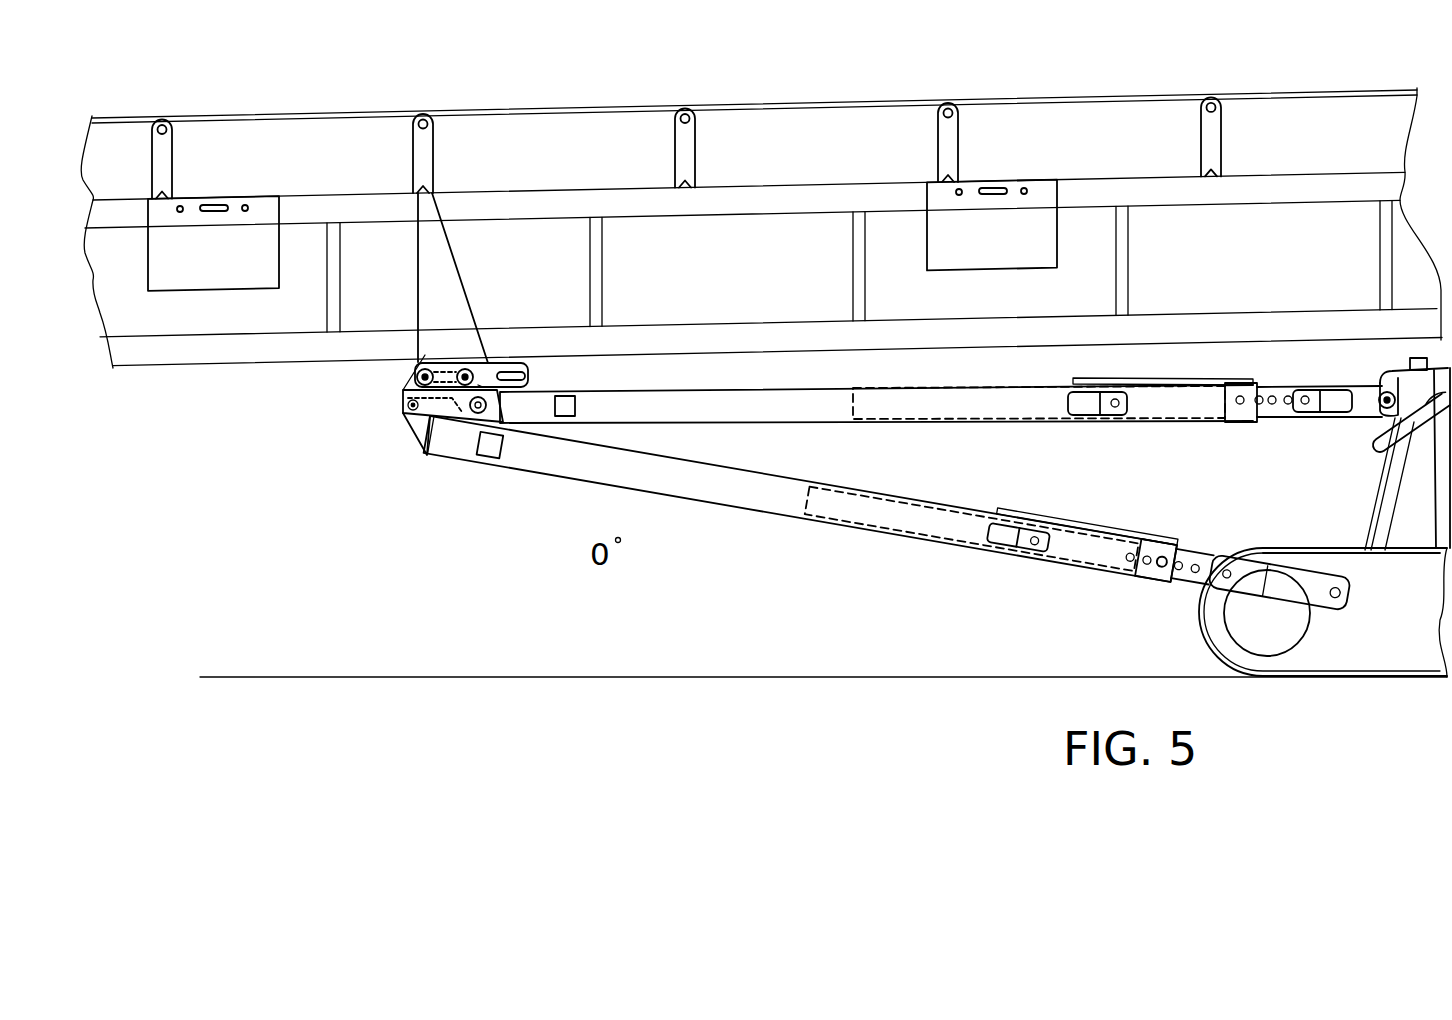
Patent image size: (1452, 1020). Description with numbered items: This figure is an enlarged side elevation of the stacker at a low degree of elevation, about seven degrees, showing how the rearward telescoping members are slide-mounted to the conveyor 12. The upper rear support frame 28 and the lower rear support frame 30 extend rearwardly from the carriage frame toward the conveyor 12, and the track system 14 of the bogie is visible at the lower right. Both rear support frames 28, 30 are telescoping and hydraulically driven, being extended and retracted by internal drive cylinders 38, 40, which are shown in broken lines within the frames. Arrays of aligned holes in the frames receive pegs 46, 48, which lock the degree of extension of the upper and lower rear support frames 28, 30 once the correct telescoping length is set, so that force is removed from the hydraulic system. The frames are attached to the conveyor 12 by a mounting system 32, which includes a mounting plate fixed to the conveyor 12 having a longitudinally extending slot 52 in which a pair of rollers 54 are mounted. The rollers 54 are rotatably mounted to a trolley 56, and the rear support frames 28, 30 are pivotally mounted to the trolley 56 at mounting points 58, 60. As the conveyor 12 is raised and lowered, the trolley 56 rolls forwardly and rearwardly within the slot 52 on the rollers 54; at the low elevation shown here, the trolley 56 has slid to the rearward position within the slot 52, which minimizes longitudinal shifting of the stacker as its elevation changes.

The conveyor 12 is at (1086, 95).
The track system 14 is at (1295, 682).
The upper rear support frame 28 is at (793, 426).
The lower rear support frame 30 is at (712, 505).
The mounting system 32 is at (538, 372).
The internal drive cylinder 38 is at (962, 420).
The internal drive cylinder 40 is at (888, 528).
The peg 46 is at (1243, 408).
The peg 48 is at (1163, 553).
The longitudinally extending slot 52 is at (510, 371).
The rollers 54 is at (464, 368).
The trolley 56 is at (408, 394).
The mounting point 58 is at (477, 414).
The mounting point 60 is at (413, 412).